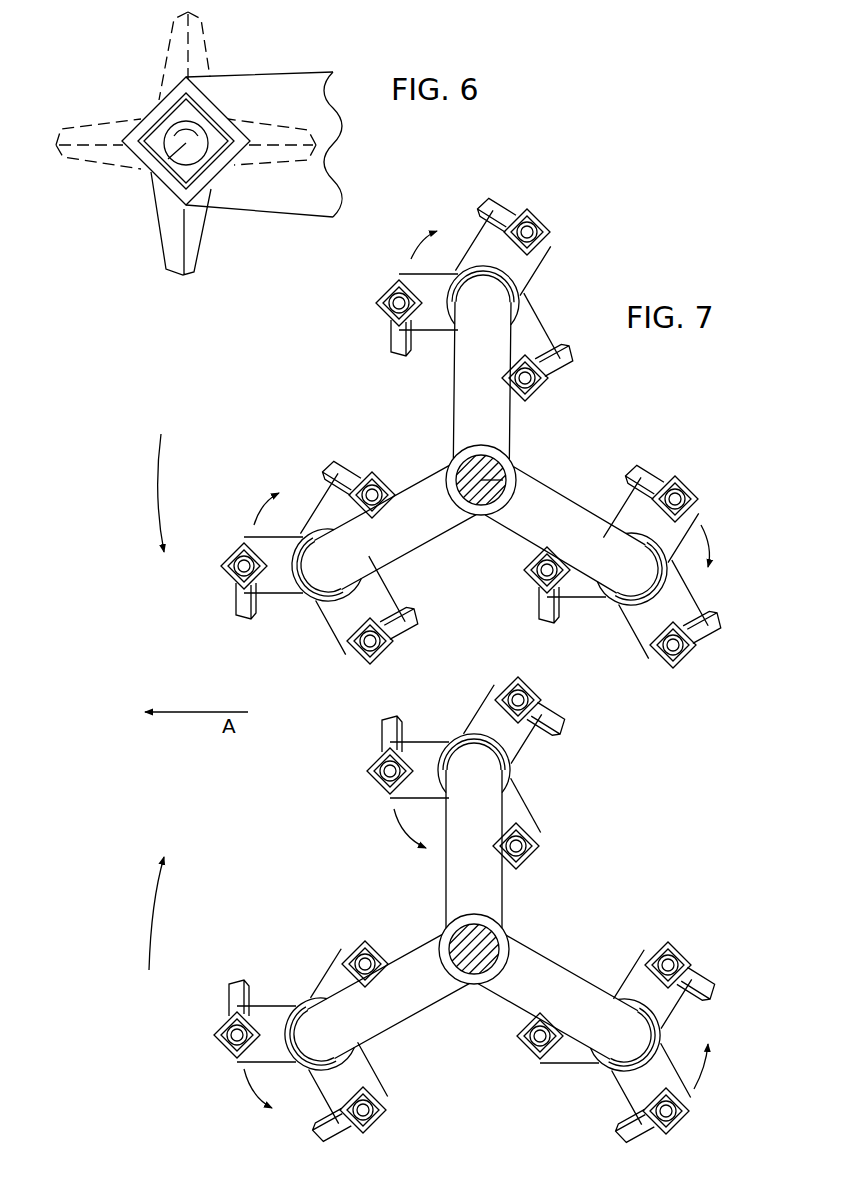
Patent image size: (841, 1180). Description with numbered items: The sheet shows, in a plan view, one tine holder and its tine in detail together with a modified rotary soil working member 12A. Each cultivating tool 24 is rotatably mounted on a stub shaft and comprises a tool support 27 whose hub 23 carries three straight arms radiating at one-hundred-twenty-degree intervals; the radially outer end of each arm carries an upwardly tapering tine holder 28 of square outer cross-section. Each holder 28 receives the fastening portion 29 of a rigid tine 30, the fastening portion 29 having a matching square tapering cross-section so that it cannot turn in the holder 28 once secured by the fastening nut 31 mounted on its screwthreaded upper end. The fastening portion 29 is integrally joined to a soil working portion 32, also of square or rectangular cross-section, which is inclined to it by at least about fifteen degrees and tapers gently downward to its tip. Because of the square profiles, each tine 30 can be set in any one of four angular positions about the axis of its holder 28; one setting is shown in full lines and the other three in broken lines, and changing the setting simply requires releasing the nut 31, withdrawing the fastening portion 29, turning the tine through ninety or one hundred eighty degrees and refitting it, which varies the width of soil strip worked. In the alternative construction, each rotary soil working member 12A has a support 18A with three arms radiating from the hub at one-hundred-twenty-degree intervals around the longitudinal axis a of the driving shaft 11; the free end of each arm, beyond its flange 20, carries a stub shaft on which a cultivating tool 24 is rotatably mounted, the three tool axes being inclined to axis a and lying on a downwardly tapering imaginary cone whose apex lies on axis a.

In FIG. 7, the shaft 11 is at (497, 460).
In FIG. 7, the rotary soil working member 12A is at (333, 709).
In FIG. 7, the support 18A is at (450, 400).
In FIG. 7, the flange 20 is at (512, 287).
In FIG. 7, the hub 23 is at (442, 333).
In FIG. 6, the cultivating tool 24 is at (324, 69).
In FIG. 7, the cultivating tool 24 is at (537, 267).
In FIG. 6, the tool support 27 is at (328, 182).
In FIG. 7, the tool support 27 is at (473, 257).
In FIG. 6, the tine holder 28 is at (157, 103).
In FIG. 7, the tine holder 28 is at (549, 207).
In FIG. 6, the fastening portion 29 is at (150, 164).
In FIG. 7, the fastening portion 29 is at (549, 237).
In FIG. 6, the rigid tine 30 is at (157, 238).
In FIG. 7, the fastening nut 31 is at (552, 222).
In FIG. 6, the soil working portion 32 is at (206, 58).
In FIG. 7, the soil working portion 32 is at (493, 195).
In FIG. 7, the longitudinal axis of the shaft a is at (505, 490).